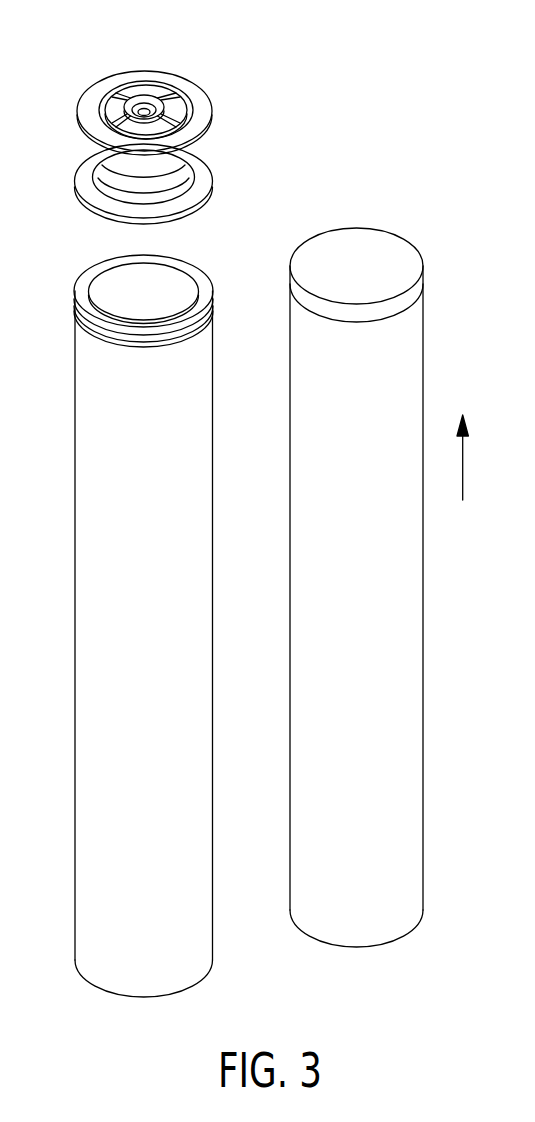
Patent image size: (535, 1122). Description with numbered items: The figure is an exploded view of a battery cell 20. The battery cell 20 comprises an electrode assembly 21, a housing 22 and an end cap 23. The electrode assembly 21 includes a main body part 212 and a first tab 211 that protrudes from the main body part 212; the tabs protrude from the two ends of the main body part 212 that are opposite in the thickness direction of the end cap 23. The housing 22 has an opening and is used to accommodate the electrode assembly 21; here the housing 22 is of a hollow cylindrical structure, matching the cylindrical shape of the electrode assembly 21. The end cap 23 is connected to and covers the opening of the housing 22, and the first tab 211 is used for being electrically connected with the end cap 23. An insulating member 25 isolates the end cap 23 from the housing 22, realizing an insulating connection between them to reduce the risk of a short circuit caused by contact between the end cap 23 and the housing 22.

The battery cell 20 is at (386, 91).
The electrode assembly 21 is at (459, 780).
The first tab 211 is at (402, 248).
The main body part 212 is at (407, 680).
The housing 22 is at (90, 768).
The end cap 23 is at (198, 108).
The insulating member 25 is at (200, 175).